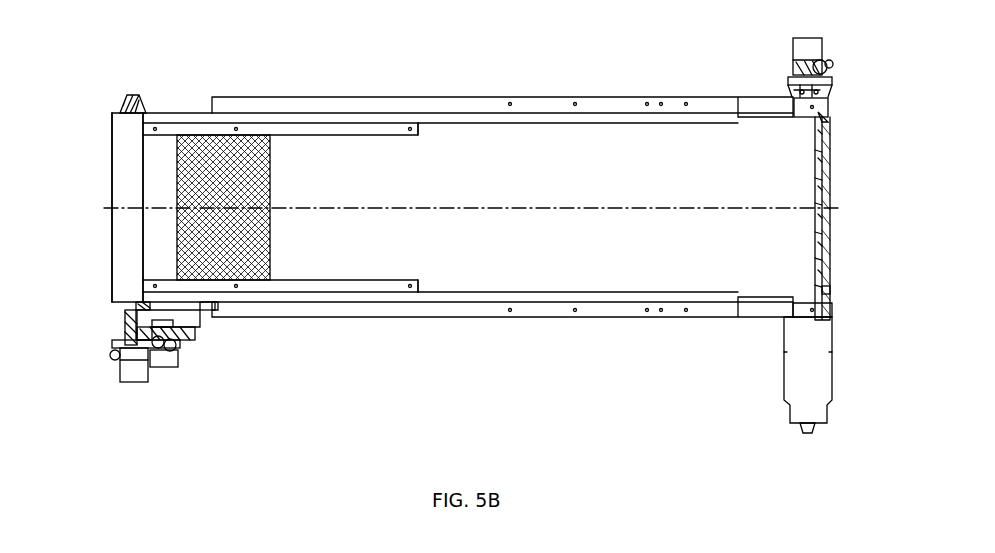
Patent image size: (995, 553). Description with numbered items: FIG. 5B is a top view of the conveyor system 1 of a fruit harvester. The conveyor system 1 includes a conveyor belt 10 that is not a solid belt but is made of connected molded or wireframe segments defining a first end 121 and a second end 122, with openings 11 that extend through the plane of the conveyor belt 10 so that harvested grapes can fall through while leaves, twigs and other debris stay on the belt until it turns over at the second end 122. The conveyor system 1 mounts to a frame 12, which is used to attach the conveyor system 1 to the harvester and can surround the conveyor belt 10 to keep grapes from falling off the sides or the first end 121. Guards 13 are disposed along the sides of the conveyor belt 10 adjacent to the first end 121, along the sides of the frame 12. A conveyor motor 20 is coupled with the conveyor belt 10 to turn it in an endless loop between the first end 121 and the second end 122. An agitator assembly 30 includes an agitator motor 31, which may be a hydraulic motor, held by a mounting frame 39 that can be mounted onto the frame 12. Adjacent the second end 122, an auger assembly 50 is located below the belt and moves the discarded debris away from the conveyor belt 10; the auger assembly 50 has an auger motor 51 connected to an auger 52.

The conveyor system 1 is at (189, 66).
The conveyor belt 10 is at (410, 150).
The openings 11 is at (213, 158).
The frame 12 is at (550, 105).
The guards 13 is at (336, 128).
The first end 121 is at (115, 200).
The second end 122 is at (805, 193).
The conveyor motor 20 is at (130, 370).
The agitator assembly 30 is at (192, 355).
The agitator motor 31 is at (168, 357).
The mounting frame 39 is at (185, 317).
The auger assembly 50 is at (798, 340).
The auger motor 51 is at (808, 45).
The auger 52 is at (827, 263).